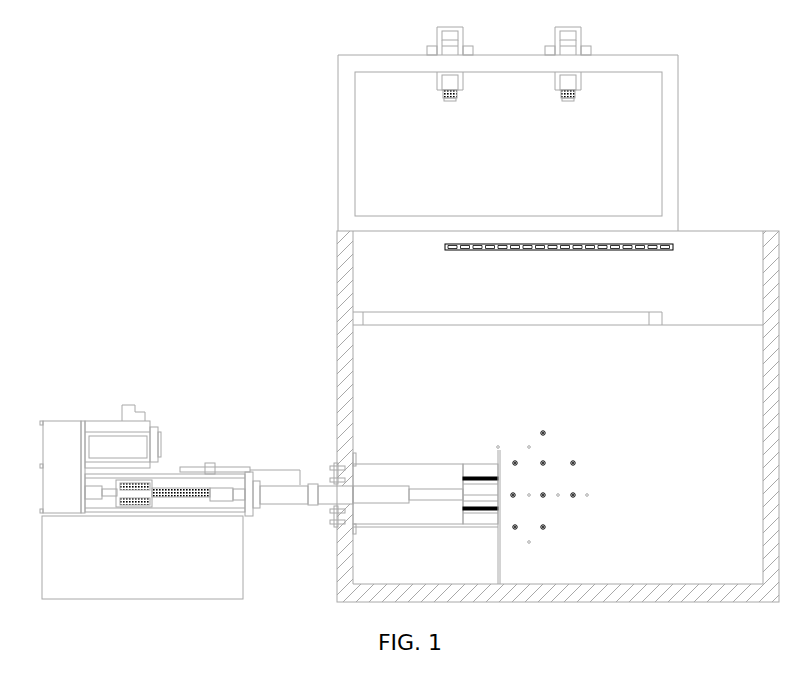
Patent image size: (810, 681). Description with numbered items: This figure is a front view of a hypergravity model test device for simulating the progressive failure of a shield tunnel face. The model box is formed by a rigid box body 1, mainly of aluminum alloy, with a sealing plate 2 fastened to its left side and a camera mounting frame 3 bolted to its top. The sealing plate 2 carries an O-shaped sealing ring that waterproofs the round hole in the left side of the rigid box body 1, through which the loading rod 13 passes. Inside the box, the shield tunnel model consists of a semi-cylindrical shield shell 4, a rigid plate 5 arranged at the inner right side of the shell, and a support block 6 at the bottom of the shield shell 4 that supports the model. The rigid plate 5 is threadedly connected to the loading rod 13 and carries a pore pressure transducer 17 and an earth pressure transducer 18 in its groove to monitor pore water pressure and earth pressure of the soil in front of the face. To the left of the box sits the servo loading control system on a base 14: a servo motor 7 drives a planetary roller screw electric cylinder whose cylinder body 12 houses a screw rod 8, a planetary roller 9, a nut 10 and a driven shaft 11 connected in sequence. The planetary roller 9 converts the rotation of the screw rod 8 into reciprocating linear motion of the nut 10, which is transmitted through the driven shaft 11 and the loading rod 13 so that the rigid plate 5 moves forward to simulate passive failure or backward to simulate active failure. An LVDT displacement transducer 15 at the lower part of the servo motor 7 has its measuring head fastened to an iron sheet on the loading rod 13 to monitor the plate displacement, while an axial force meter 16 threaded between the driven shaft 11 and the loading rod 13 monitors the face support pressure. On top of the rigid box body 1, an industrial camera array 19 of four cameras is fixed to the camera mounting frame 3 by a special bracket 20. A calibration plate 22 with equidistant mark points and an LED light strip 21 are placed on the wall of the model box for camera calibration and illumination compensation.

The rigid box body 1 is at (343, 375).
The sealing plate 2 is at (337, 468).
The camera mounting frame 3 is at (347, 217).
The shield shell 4 is at (458, 463).
The rigid plate 5 is at (488, 463).
The support block 6 is at (492, 545).
The servo motor 7 is at (110, 418).
The screw rod 8 is at (100, 503).
The planetary roller 9 is at (145, 483).
The nut 10 is at (145, 510).
The driven shaft 11 is at (190, 505).
The cylinder body 12 is at (235, 513).
The loading rod 13 is at (330, 493).
The base 14 is at (243, 555).
The LVDT displacement transducer 15 is at (258, 464).
The axial force meter 16 is at (316, 505).
The pore pressure transducer 17 is at (517, 461).
The earth pressure transducer 18 is at (500, 508).
The industrial camera array 19 is at (463, 82).
The special bracket 20 is at (463, 27).
The LED light strip 21 is at (492, 242).
The calibration plate 22 is at (493, 312).